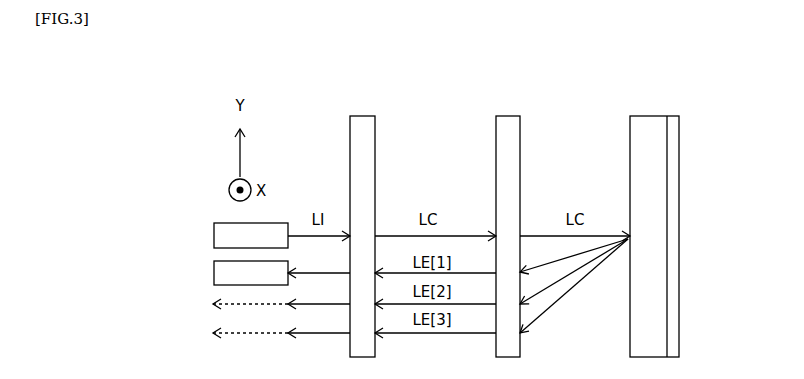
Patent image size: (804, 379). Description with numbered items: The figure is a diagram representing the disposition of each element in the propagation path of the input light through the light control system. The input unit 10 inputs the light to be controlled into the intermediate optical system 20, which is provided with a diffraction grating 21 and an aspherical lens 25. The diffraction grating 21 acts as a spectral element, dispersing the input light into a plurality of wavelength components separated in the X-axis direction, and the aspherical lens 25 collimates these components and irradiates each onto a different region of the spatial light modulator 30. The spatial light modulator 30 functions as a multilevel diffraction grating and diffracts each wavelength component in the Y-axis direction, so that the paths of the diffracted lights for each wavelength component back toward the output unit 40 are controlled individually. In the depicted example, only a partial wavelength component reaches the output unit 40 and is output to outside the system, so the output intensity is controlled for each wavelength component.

The input unit 10 is at (214, 234).
The intermediate optical system 20 is at (340, 83).
The diffraction grating 21 is at (370, 116).
The aspherical lens 25 is at (515, 116).
The spatial light modulator 30 is at (679, 116).
The output unit 40 is at (214, 278).